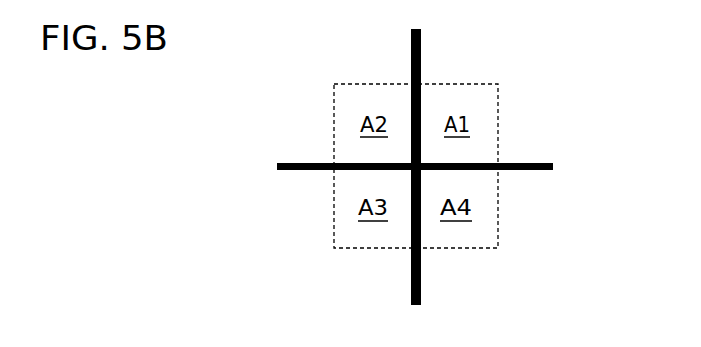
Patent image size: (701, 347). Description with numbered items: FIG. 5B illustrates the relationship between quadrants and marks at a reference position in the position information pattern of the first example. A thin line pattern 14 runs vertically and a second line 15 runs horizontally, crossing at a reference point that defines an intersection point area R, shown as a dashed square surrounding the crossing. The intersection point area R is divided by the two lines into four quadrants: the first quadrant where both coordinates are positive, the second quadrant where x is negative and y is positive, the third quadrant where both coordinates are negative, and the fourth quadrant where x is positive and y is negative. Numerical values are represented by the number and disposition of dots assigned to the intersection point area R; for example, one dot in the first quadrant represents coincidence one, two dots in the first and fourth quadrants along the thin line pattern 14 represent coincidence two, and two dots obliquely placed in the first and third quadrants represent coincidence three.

The thin line pattern 14 is at (421, 52).
The horizontal line (second line) 15 is at (524, 170).
The intersection point area R is at (514, 112).